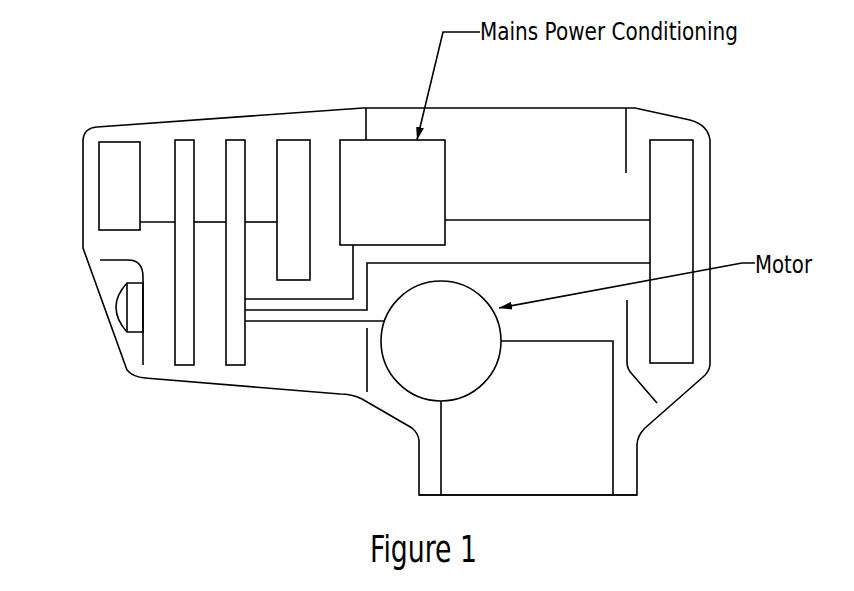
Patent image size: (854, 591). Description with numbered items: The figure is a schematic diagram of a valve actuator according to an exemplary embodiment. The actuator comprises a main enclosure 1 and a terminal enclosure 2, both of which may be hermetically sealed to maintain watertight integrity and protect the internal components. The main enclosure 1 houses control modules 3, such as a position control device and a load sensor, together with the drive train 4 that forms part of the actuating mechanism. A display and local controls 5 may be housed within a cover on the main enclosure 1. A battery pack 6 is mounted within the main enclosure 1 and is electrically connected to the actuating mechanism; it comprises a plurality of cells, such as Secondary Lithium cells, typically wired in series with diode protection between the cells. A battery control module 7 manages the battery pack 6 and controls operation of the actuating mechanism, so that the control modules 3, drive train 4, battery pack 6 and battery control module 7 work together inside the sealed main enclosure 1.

The main enclosure 1 is at (375, 408).
The terminal enclosure 2 is at (693, 170).
The control modules 3 is at (173, 138).
The drive train 4 is at (568, 450).
The display and local controls 5 is at (98, 213).
The battery pack 6 is at (288, 138).
The battery control module 7 is at (236, 139).